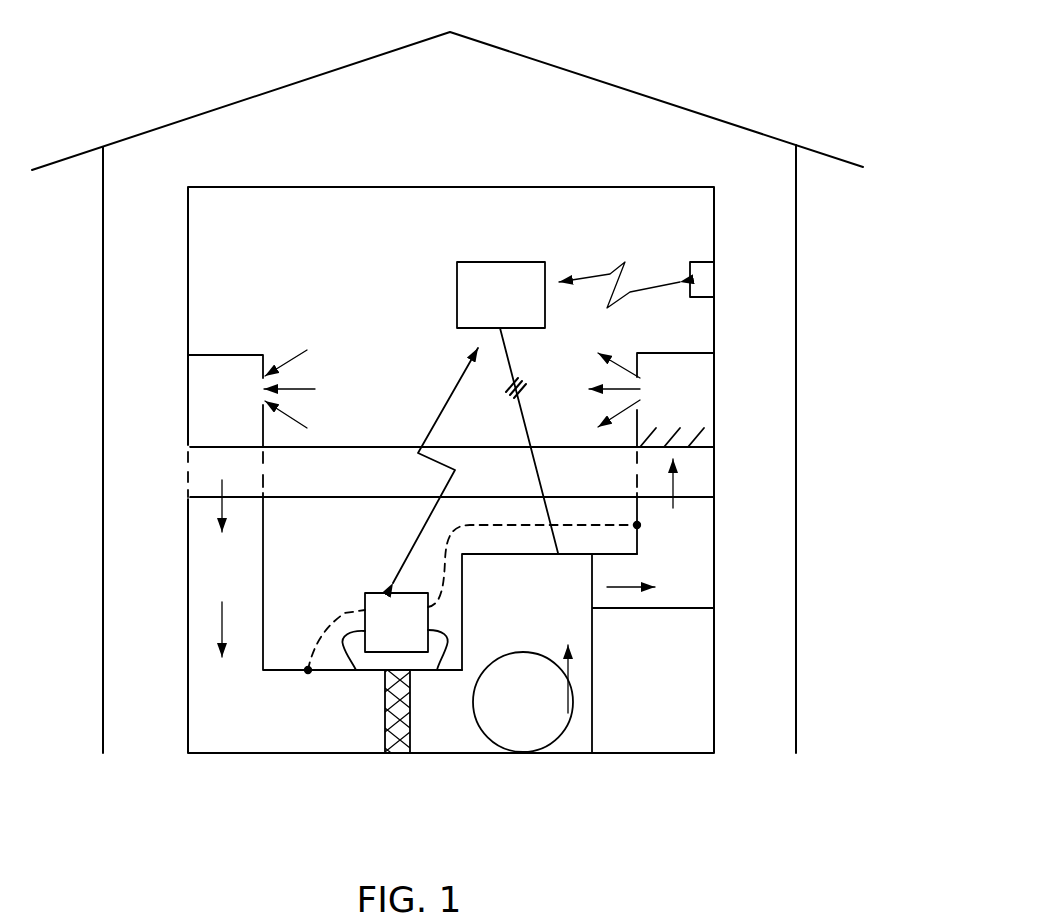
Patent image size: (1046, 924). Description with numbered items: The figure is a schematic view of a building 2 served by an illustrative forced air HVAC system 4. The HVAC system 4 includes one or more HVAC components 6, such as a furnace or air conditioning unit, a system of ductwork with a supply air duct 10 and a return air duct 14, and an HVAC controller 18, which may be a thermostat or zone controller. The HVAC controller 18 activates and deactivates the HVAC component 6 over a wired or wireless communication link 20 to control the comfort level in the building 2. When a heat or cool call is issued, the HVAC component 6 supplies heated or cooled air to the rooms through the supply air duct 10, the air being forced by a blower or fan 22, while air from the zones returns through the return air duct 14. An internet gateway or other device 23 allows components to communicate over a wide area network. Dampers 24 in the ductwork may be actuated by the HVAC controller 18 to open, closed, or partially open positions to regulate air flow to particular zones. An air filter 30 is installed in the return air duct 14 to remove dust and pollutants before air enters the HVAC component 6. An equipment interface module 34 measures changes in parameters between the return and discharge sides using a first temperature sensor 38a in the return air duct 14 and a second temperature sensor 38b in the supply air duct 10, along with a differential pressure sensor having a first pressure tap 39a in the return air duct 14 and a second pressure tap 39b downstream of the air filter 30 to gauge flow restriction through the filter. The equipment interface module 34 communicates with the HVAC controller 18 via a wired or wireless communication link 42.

The building 2 is at (655, 96).
The HVAC system 4 is at (683, 735).
The HVAC component 6 is at (593, 700).
The supply air duct 10 is at (688, 572).
The return air duct 14 is at (213, 565).
The HVAC controller 18 is at (500, 262).
The wired or wireless communication link 20 is at (518, 418).
The blower or fan 22 is at (556, 740).
The internet gateway 23 is at (702, 282).
The damper 24 is at (714, 441).
The air filter 30 is at (398, 755).
The equipment interface module 34 is at (380, 593).
The first temperature sensor 38a is at (305, 672).
The second temperature sensor 38b is at (641, 525).
The first pressure tap 39a is at (365, 673).
The second pressure tap 39b is at (447, 648).
The wired or wireless communication link 42 is at (460, 384).